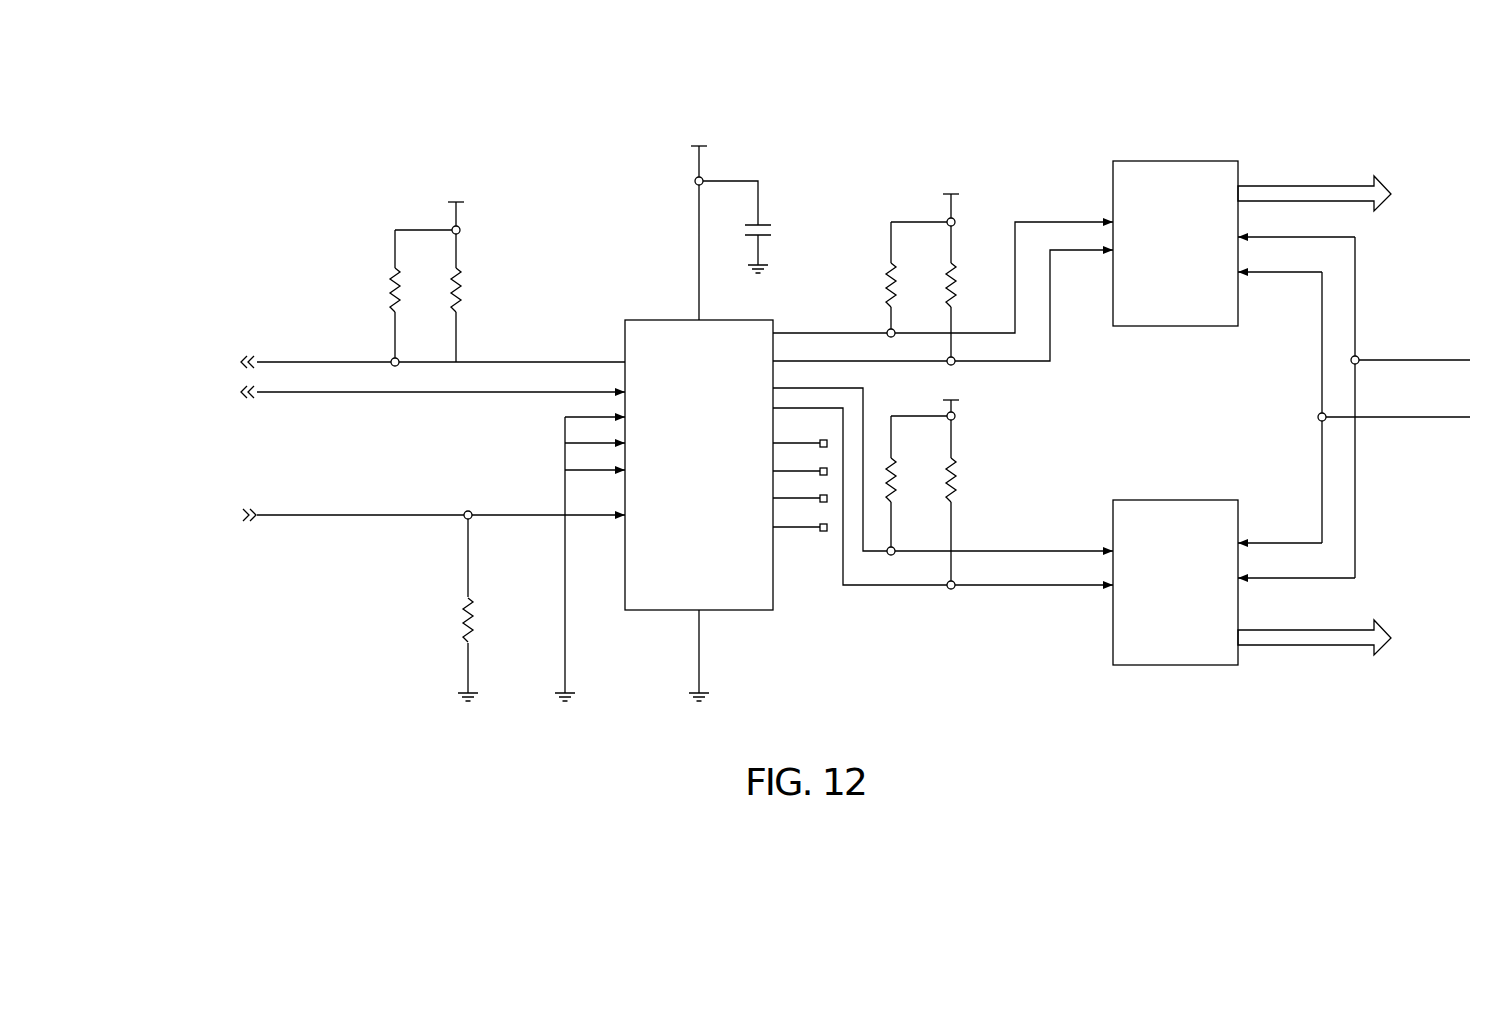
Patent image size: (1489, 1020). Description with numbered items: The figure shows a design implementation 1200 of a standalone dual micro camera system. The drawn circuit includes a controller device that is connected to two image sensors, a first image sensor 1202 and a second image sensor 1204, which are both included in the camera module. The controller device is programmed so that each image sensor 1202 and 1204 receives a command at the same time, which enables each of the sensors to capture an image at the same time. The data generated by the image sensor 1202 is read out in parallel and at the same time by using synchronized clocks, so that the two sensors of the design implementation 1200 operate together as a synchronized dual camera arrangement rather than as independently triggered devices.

The design implementation 1200 is at (335, 100).
The image sensor 1202 is at (1175, 327).
The image sensor 1204 is at (1113, 632).